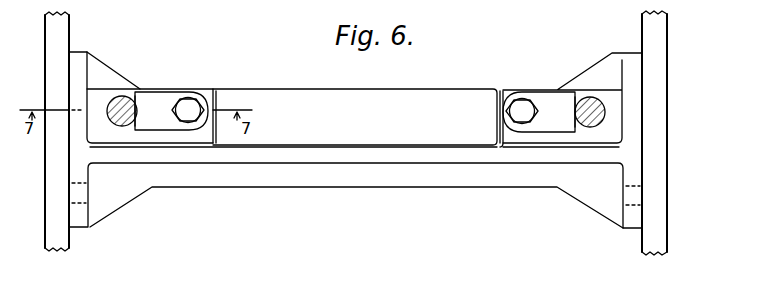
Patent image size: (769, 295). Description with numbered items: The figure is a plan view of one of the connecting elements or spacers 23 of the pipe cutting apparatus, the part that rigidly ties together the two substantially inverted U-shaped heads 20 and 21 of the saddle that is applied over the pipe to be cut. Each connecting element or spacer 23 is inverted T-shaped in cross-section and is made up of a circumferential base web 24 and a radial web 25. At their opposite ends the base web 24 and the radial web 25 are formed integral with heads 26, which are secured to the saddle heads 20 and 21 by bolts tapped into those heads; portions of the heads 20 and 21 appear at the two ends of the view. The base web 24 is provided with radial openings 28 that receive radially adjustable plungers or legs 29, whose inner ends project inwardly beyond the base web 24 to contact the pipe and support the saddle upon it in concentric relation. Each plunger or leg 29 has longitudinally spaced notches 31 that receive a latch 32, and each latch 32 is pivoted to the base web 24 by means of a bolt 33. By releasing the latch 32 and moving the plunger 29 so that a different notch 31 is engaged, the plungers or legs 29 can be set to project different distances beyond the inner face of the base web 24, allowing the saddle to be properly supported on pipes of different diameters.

The head 20 is at (648, 226).
The head 21 is at (62, 227).
The connecting element or spacer 23 is at (308, 165).
The circumferential base web 24 is at (480, 100).
The radial web 25 is at (432, 160).
The head 26 is at (632, 78).
The radial opening 28 is at (115, 93).
The plunger or leg 29 is at (590, 110).
The notch 31 is at (140, 118).
The latch 32 is at (160, 102).
The bolt 33 is at (190, 107).